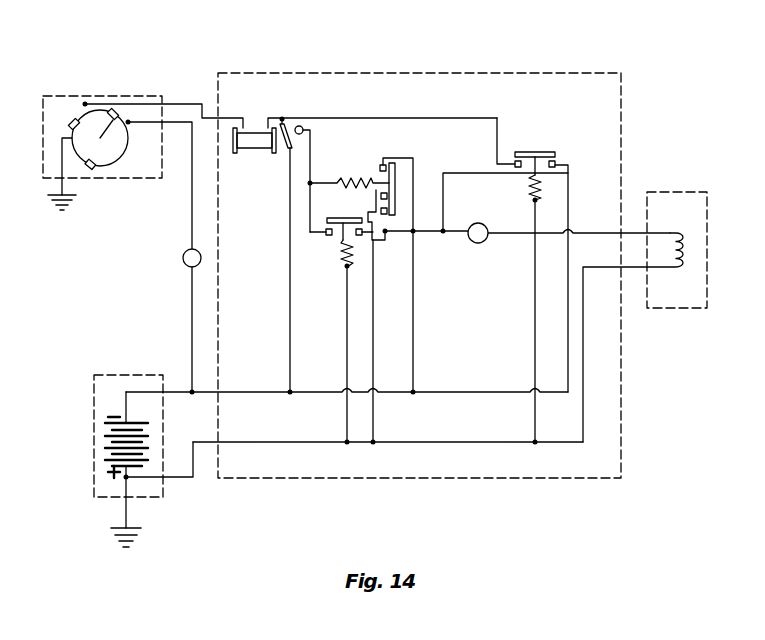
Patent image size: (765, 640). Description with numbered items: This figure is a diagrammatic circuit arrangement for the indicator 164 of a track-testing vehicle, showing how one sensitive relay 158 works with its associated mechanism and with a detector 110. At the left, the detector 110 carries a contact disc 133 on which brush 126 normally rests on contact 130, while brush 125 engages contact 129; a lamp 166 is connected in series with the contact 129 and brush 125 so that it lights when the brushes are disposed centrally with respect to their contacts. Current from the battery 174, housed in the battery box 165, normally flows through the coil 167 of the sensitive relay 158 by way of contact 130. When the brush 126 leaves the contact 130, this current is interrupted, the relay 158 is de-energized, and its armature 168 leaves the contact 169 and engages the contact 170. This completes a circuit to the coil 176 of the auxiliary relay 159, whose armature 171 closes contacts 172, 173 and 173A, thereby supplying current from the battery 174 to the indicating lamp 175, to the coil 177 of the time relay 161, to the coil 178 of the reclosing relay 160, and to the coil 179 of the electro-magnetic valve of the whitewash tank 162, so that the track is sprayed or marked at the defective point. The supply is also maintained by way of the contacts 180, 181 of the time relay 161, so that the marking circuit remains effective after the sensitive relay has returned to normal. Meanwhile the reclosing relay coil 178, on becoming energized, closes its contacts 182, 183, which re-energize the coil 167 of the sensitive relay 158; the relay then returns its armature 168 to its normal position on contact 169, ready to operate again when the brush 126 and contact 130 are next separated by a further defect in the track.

The detector 110 is at (110, 152).
The brush 125 is at (114, 110).
The brush 126 is at (73, 120).
The contact 129 is at (128, 122).
The contact 130 is at (92, 165).
The contact disc 133 is at (97, 112).
The sensitive relay 158 is at (275, 155).
The auxiliary relay 159 is at (360, 192).
The reclosing relay 160 is at (560, 167).
The time relay 161 is at (345, 243).
The whitewash tank 162 is at (677, 309).
The indicator 164 is at (444, 72).
The battery box 165 is at (94, 405).
The lamp 166 is at (183, 260).
The coil of sensitive relay 167 is at (250, 127).
The armature 168 is at (291, 143).
The contact 169 is at (282, 119).
The contact 170 is at (301, 127).
The armature 171 is at (413, 162).
The contact 172 is at (383, 164).
The contact 173 is at (387, 193).
The contact 173A is at (387, 214).
The battery 174 is at (105, 447).
The indicating lamp 175 is at (481, 243).
The coil of auxiliary relay 176 is at (376, 182).
The coil of time relay 177 is at (347, 268).
The coil of reclosing relay 178 is at (515, 308).
The coil of electro-magnetic valve 179 is at (673, 232).
The contact of time relay 180 is at (330, 237).
The contact of time relay 181 is at (360, 237).
The contact of reclosing relay 182 is at (520, 150).
The contact of reclosing relay 183 is at (556, 161).